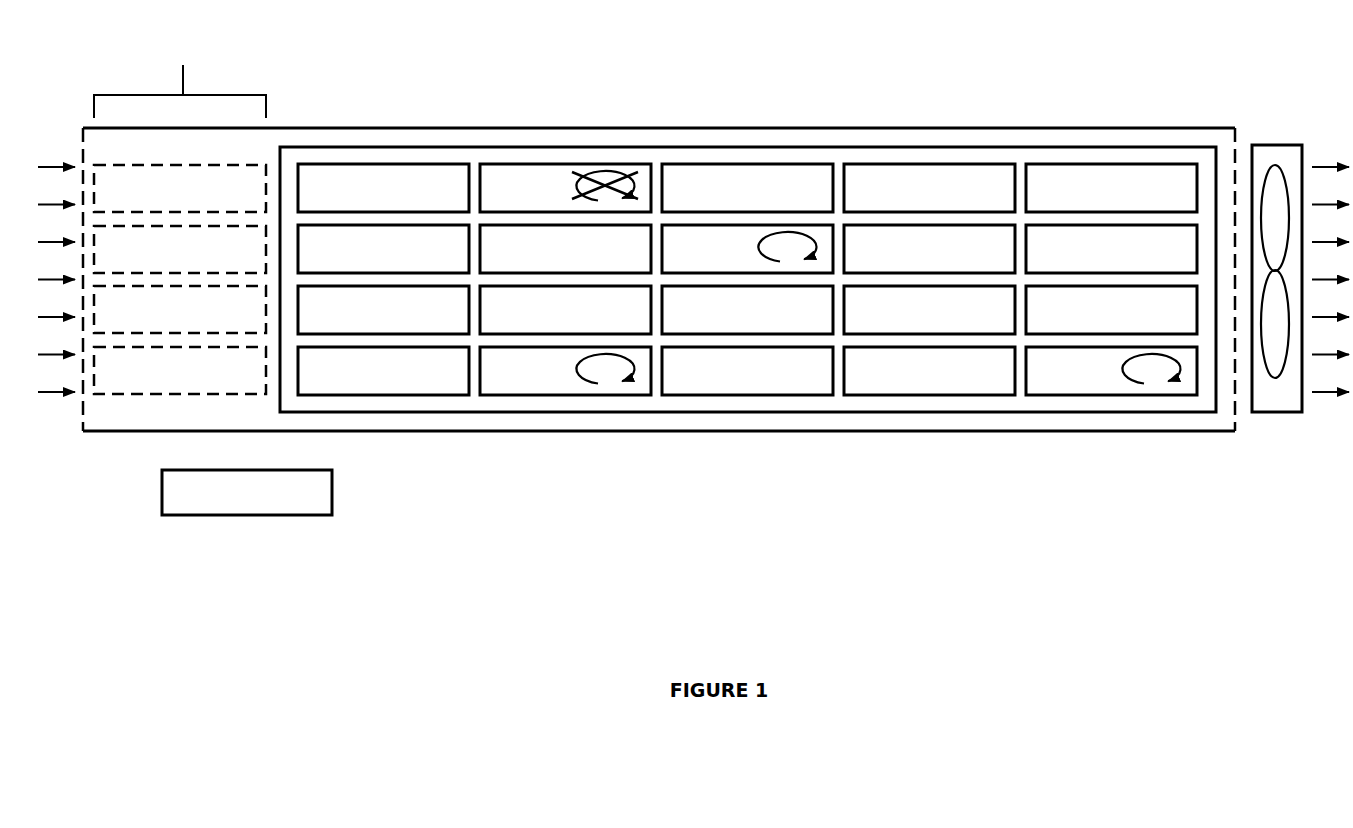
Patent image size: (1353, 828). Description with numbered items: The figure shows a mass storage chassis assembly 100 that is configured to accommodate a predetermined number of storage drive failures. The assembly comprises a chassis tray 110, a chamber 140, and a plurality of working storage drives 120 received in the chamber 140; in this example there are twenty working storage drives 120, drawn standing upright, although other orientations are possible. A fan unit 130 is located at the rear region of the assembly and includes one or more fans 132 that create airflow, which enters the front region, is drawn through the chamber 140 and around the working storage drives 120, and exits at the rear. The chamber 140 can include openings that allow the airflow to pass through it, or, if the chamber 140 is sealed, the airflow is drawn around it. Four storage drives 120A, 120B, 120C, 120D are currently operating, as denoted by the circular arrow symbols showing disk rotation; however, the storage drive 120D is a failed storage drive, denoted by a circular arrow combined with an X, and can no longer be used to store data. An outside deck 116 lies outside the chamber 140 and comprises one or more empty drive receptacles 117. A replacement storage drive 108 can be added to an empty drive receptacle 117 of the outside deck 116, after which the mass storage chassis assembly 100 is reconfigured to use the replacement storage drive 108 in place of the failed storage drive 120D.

The mass storage chassis assembly 100 is at (1107, 582).
The replacement storage drive 108 is at (186, 390).
The chassis tray 110 is at (456, 432).
The outside deck 116 is at (180, 79).
The empty drive receptacle 117 is at (162, 198).
The working storage drive 120 is at (365, 200).
The storage drive 120A is at (509, 383).
The storage drive 120B is at (1055, 383).
The storage drive 120C is at (691, 261).
The failed storage drive 120D is at (560, 200).
The fan unit 130 is at (1288, 281).
The fan 132 is at (1275, 375).
The chamber 140 is at (568, 413).